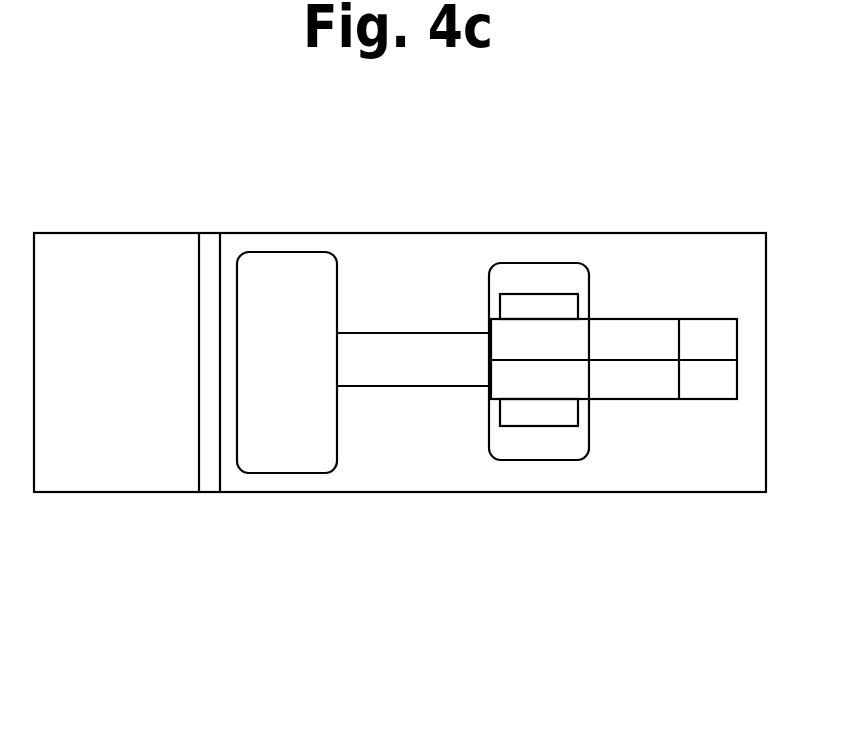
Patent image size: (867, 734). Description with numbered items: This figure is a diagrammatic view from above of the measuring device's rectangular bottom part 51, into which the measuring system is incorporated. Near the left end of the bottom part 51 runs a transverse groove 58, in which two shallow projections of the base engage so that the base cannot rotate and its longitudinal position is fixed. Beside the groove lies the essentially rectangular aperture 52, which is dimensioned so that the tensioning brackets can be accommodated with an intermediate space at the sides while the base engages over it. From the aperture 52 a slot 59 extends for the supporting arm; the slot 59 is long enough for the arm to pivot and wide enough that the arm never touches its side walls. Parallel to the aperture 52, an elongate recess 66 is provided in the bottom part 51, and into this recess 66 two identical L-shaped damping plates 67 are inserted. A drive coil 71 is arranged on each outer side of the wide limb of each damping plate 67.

The bottom part 51 is at (653, 491).
The aperture 52 is at (285, 250).
The transverse groove 58 is at (209, 248).
The slot 59 is at (413, 345).
The elongate recess 66 is at (535, 263).
The damping plates 67 is at (650, 319).
The drive coil 71 is at (555, 294).